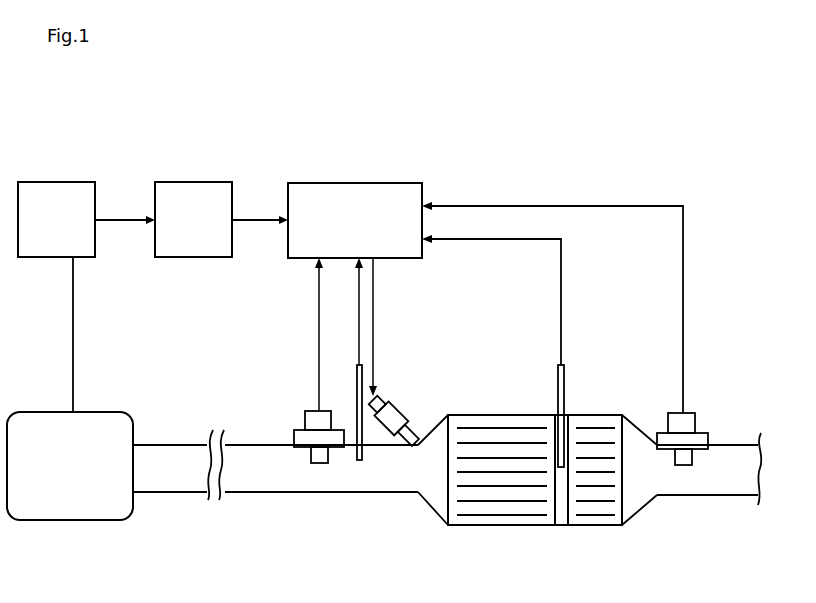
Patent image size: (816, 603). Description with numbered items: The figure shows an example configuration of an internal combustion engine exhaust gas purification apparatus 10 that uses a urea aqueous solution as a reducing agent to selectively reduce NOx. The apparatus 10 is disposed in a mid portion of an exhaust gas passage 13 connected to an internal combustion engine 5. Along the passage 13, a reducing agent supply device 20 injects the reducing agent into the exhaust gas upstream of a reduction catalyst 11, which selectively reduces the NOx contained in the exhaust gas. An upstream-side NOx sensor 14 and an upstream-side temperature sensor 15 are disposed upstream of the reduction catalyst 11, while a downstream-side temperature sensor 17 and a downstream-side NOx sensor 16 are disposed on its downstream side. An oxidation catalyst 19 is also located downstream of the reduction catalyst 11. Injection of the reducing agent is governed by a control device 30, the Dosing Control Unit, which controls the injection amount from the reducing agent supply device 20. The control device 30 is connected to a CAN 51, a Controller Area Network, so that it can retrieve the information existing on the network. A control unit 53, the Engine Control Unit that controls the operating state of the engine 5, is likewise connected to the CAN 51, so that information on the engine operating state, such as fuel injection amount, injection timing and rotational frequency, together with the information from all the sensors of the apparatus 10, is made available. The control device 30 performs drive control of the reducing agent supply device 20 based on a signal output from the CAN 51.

The exhaust gas purification apparatus 10 is at (656, 110).
The internal combustion engine 5 is at (58, 503).
The control unit (ECU) 53 is at (68, 200).
The CAN 51 is at (197, 200).
The control device (DCU) 30 is at (365, 200).
The exhaust gas passage 13 is at (245, 482).
The upstream-side NOx sensor 14 is at (307, 413).
The upstream-side temperature sensor 15 is at (355, 380).
The reducing agent supply device 20 is at (397, 405).
The reduction catalyst 11 is at (498, 515).
The oxidation catalyst 19 is at (592, 518).
The downstream-side temperature sensor 17 is at (558, 387).
The downstream-side NOx sensor 16 is at (678, 415).